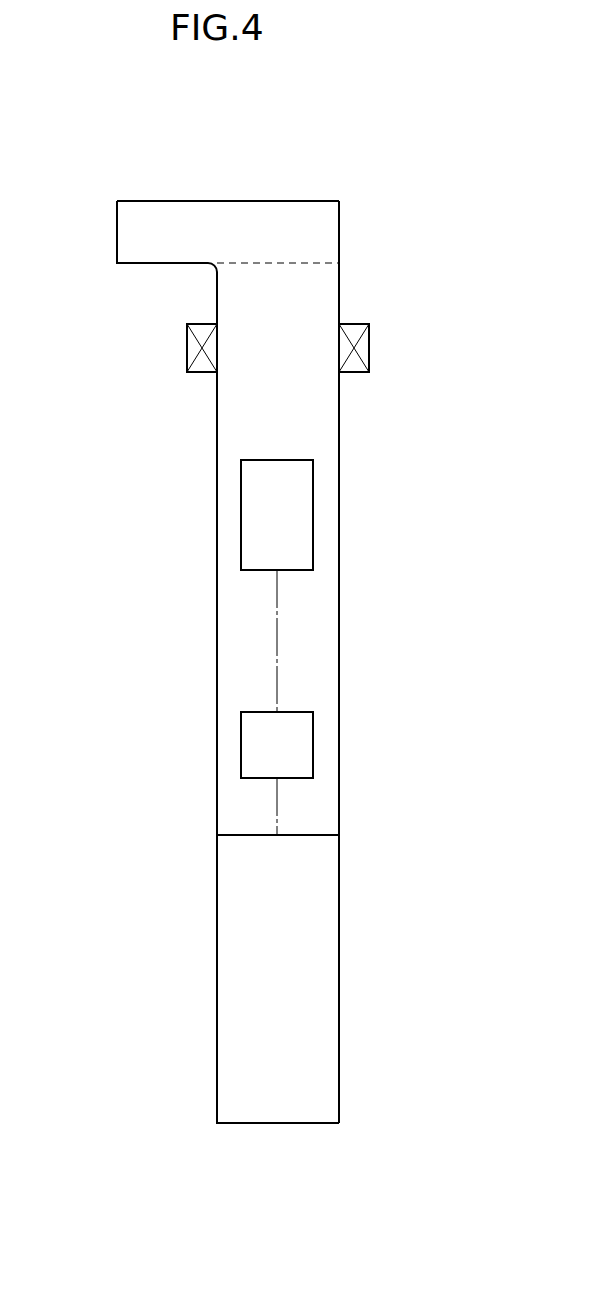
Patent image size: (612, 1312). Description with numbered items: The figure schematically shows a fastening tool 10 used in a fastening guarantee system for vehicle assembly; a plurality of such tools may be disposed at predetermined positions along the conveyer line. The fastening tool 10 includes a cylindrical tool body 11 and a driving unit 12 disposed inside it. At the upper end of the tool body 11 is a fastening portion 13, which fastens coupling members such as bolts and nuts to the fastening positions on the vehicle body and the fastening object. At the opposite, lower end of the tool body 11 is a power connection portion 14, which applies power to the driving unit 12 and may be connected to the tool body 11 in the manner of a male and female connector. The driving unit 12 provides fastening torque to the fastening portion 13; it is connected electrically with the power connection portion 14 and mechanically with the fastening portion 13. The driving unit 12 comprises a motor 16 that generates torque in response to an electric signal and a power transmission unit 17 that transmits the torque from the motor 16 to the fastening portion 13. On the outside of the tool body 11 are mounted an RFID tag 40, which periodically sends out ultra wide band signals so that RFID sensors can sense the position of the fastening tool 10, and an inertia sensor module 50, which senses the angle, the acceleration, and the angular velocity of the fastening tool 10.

The fastening tool 10 is at (239, 127).
The tool body 11 is at (217, 617).
The driving unit 12 is at (241, 745).
The fastening portion 13 is at (117, 232).
The power connection portion 14 is at (217, 977).
The motor 16 is at (313, 743).
The power transmission unit 17 is at (241, 517).
The RFID tag 40 is at (187, 347).
The inertia sensor module 50 is at (369, 346).